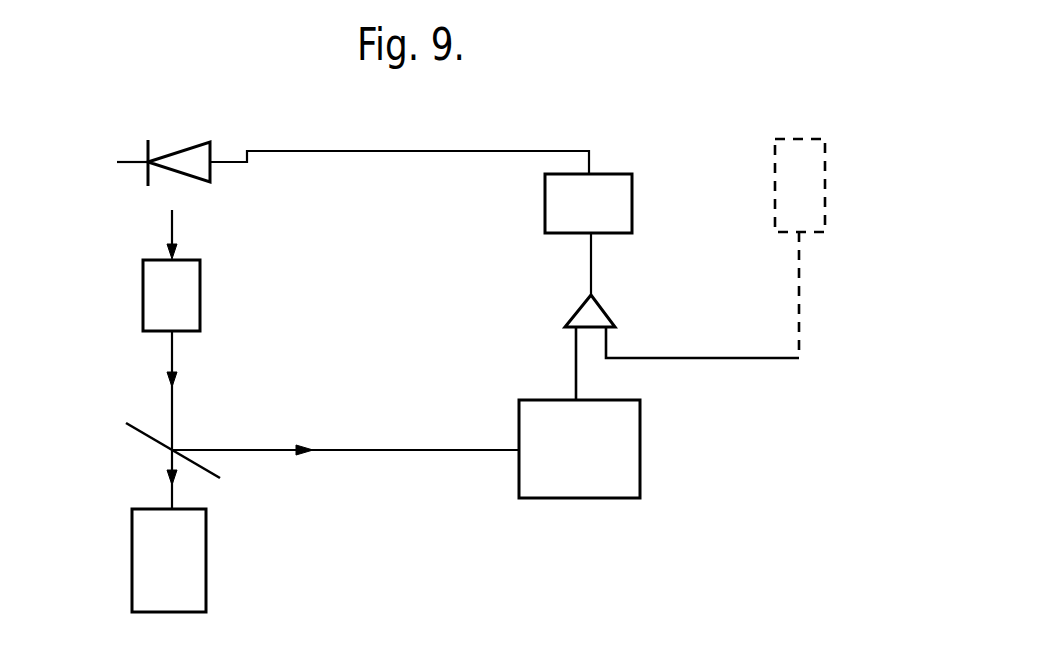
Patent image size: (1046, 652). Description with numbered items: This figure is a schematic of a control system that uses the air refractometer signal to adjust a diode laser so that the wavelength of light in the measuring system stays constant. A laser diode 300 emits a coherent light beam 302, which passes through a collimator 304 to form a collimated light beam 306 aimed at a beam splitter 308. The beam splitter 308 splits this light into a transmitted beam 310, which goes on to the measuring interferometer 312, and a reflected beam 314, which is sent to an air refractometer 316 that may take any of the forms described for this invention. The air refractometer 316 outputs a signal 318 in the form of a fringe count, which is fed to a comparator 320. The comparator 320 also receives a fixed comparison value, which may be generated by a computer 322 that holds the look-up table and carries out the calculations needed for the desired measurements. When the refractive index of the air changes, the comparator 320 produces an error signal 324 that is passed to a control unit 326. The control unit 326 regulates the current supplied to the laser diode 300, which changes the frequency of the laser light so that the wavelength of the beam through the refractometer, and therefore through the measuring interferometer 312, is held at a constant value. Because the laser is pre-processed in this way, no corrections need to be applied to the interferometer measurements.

The laser diode 300 is at (203, 141).
The coherent light beam 302 is at (173, 226).
The collimator 304 is at (200, 303).
The collimated light beam 306 is at (173, 411).
The beam splitter 308 is at (141, 437).
The transmitted beam 310 is at (173, 494).
The measuring interferometer 312 is at (206, 573).
The reflected beam 314 is at (345, 450).
The air refractometer 316 is at (640, 471).
The signal 318 is at (576, 372).
The comparator 320 is at (572, 312).
The computer 322 is at (822, 203).
The error signal 324 is at (592, 273).
The control unit 326 is at (632, 201).